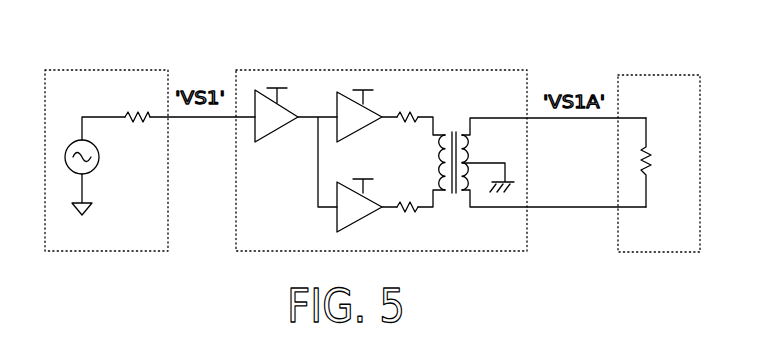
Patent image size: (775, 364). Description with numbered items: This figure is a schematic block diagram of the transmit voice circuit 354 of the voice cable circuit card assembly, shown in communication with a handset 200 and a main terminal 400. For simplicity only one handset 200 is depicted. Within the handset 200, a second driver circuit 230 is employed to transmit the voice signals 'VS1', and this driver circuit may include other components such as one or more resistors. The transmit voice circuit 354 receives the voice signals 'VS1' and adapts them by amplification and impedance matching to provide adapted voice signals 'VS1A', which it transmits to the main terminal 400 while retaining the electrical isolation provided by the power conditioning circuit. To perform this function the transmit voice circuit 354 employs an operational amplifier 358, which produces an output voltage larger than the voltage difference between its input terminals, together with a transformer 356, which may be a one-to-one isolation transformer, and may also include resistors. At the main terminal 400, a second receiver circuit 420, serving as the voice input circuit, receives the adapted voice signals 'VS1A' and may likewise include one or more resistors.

The handset 200 is at (106, 71).
The second driver circuit 230 is at (68, 102).
The transmit voice circuit 354 is at (384, 72).
The transformer 356 is at (443, 133).
The operational amplifier 358 is at (288, 128).
The main terminal 400 is at (660, 76).
The second receiver circuit 420 is at (680, 110).